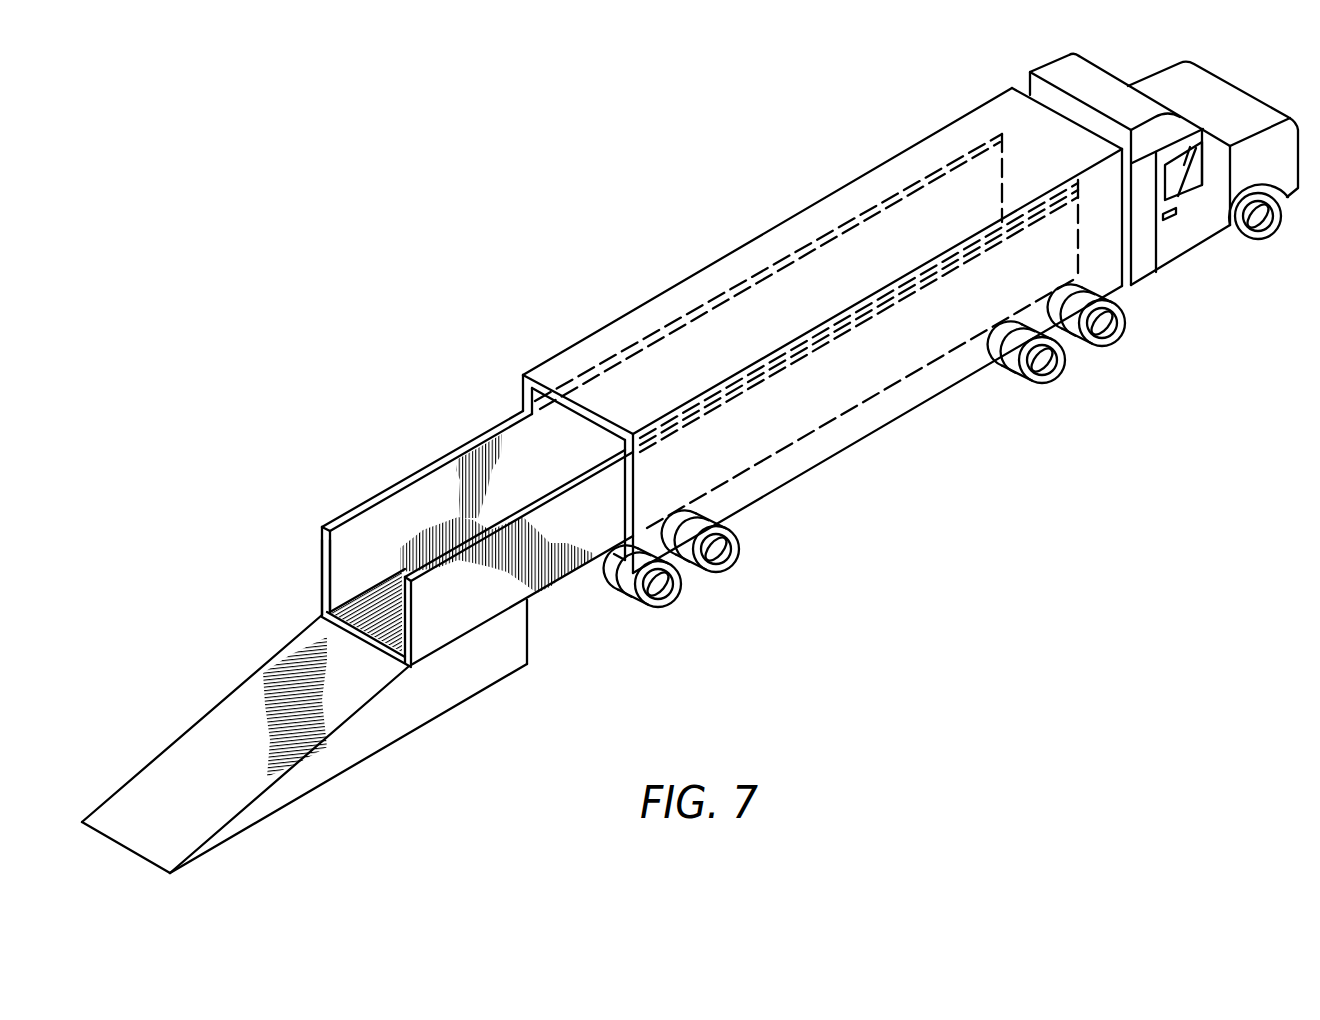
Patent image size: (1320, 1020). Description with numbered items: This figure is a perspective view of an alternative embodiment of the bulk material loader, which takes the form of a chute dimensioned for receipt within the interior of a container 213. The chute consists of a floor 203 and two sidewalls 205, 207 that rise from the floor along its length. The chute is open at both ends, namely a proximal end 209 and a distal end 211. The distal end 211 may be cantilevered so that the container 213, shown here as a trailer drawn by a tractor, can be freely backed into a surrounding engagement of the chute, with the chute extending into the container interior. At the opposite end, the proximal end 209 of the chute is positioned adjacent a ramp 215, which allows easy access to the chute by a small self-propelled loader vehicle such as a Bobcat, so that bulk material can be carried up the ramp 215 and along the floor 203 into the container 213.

The floor 203 is at (358, 618).
The sidewall 205 is at (438, 635).
The sidewall 207 is at (382, 537).
The proximal end 209 is at (324, 578).
The distal end 211 is at (1085, 215).
The container 213 is at (793, 457).
The ramp 215 is at (212, 800).